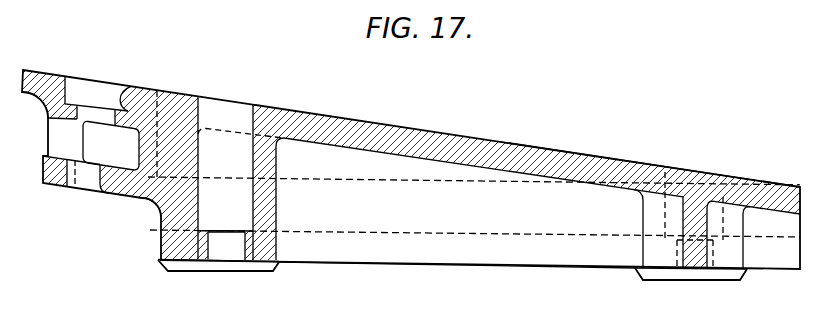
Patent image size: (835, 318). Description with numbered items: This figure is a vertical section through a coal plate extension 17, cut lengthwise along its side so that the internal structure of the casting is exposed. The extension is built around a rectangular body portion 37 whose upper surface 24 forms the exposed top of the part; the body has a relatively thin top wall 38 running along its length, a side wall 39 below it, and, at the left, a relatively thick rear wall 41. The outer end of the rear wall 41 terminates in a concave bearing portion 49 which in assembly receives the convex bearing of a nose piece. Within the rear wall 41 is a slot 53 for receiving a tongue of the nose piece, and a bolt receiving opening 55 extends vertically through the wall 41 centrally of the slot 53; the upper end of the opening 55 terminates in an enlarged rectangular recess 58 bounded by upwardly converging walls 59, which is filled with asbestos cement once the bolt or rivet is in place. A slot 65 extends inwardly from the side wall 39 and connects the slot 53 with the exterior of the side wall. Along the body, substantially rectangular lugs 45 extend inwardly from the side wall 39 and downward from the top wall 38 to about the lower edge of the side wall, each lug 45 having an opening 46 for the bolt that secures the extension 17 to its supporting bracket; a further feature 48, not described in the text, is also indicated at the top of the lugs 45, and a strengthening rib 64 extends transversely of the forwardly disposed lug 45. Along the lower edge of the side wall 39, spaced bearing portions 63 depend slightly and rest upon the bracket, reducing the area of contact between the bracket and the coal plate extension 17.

The coal plate extension 17 is at (384, 128).
The upper surface 24 is at (319, 114).
The rectangular body portion 37 is at (560, 150).
The top wall 38 is at (468, 166).
The side wall 39 is at (425, 247).
The rear wall 41 is at (151, 202).
The lug 45 is at (275, 213).
The opening 46 is at (217, 235).
The vertical bore 48 is at (251, 109).
The concave bearing portion 49 is at (43, 116).
The slot 53 is at (62, 155).
The bolt receiving opening 55 is at (82, 110).
The enlarged rectangular recess 58 is at (128, 88).
The upwardly converging wall 59 is at (72, 85).
The bearing portion 63 is at (221, 271).
The strengthening rib 64 is at (708, 228).
The slot 65 is at (135, 152).